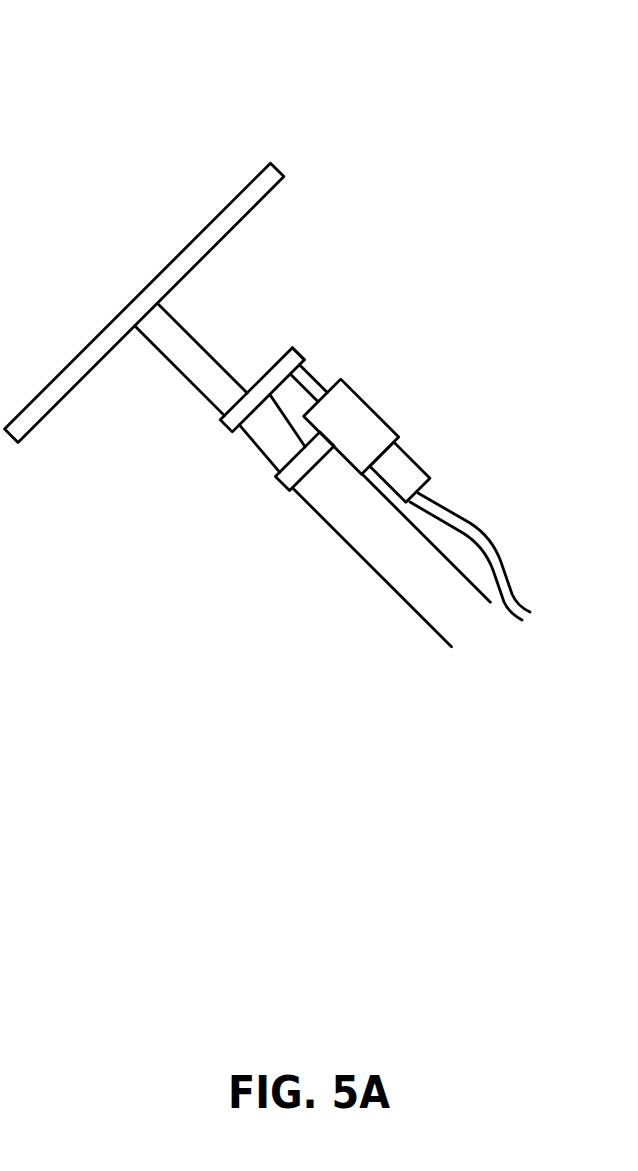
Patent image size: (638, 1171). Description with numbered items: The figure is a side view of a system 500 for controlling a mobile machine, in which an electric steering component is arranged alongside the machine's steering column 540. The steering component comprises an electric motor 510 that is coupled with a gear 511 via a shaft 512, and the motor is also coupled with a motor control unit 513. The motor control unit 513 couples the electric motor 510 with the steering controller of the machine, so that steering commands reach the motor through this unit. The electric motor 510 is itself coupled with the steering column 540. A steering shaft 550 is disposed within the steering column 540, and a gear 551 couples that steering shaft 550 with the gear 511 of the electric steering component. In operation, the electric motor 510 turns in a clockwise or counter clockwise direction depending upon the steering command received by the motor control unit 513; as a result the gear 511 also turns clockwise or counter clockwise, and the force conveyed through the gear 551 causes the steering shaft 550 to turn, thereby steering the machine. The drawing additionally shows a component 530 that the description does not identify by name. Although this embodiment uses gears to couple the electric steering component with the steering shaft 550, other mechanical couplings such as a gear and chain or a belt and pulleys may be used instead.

The system 500 is at (267, 344).
The handle bar 530 is at (110, 339).
The steering shaft 550 is at (224, 422).
The gear 551 is at (276, 446).
The gear 511 is at (299, 358).
The shaft 512 is at (305, 380).
The electric motor 510 is at (370, 433).
The motor control unit 513 is at (398, 472).
The steering column 540 is at (397, 559).